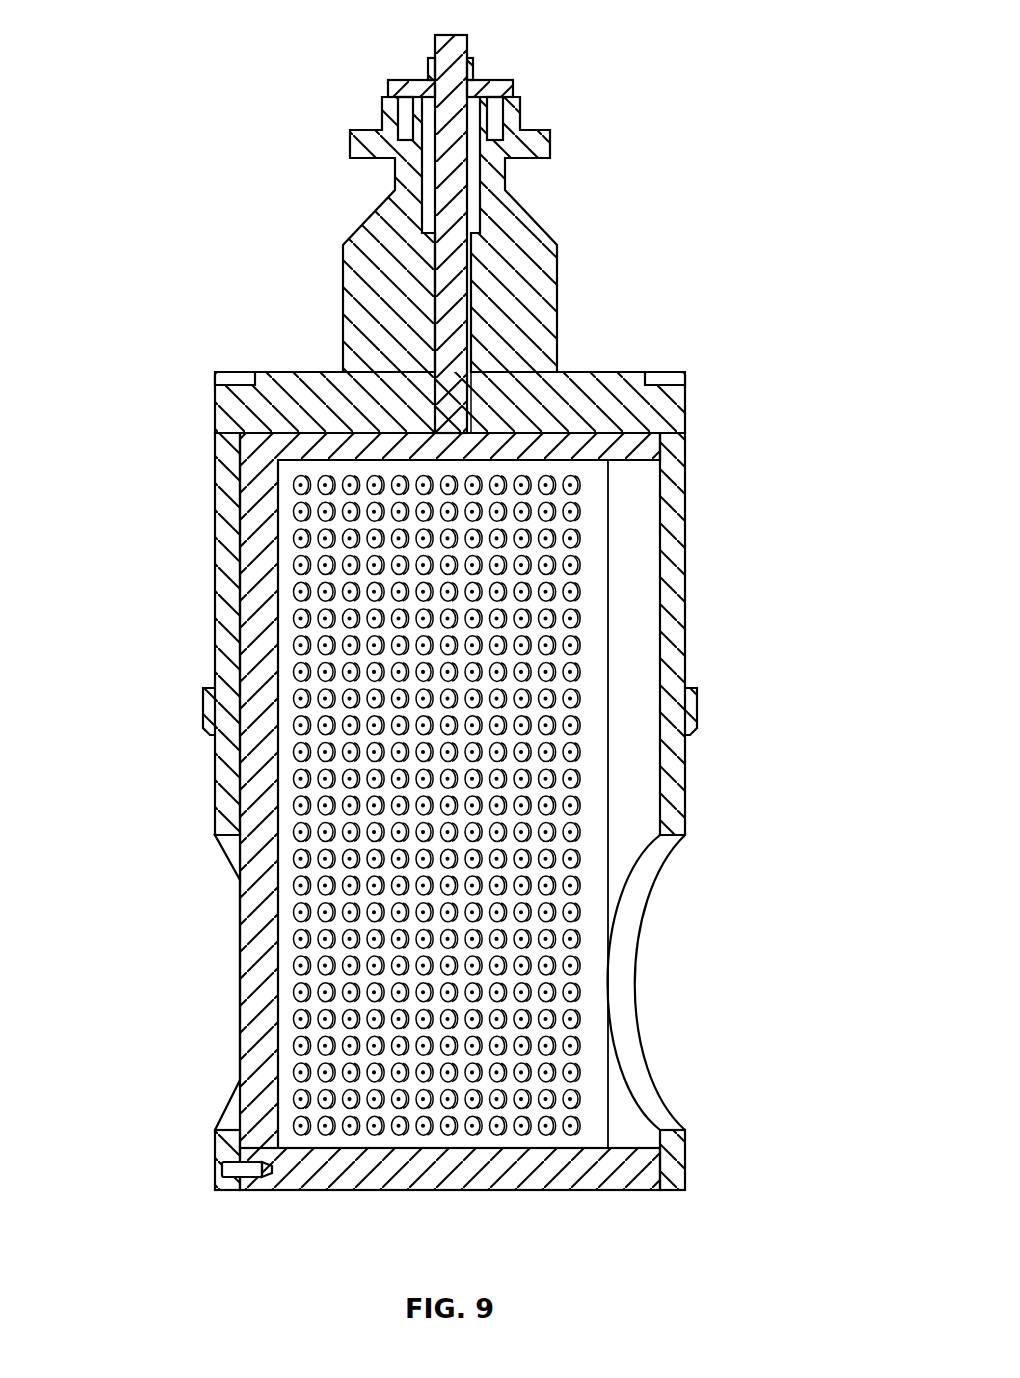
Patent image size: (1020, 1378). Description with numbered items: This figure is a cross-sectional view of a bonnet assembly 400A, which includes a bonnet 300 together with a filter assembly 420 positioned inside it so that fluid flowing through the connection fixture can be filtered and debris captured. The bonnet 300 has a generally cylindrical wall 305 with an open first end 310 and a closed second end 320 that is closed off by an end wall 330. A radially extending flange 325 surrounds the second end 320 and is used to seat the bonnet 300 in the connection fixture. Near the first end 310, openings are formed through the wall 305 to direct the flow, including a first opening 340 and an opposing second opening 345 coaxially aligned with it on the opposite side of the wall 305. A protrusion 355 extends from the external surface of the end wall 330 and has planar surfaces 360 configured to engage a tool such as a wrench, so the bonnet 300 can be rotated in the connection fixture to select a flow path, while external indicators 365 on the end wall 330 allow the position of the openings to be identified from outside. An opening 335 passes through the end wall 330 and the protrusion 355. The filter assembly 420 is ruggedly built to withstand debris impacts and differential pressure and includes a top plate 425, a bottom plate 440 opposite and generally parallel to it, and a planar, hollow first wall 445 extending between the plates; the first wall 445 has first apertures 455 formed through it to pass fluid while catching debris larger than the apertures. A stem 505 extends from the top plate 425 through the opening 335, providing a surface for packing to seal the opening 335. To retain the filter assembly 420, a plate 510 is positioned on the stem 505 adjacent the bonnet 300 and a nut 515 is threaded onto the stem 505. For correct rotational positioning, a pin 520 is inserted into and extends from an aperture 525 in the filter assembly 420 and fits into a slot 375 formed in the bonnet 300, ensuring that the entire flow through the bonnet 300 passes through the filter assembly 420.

The bonnet assembly 400A is at (238, 146).
The bonnet 300 is at (212, 440).
The wall 305 is at (220, 540).
The first end 310 is at (672, 1192).
The second end 320 is at (247, 382).
The flange 325 is at (204, 713).
The end wall 330 is at (318, 398).
The opening 335 is at (462, 284).
The first opening 340 is at (680, 840).
The second opening 345 is at (228, 842).
The protrusion 355 is at (513, 287).
The planar surfaces 360 is at (348, 270).
The external indicators 365 is at (235, 378).
The slot 375 is at (224, 1170).
The filter assembly 420 is at (626, 594).
The top plate 425 is at (620, 448).
The bottom plate 440 is at (528, 1166).
The first wall 445 is at (597, 905).
The first apertures 455 is at (572, 965).
The stem 505 is at (453, 160).
The plate 510 is at (405, 93).
The nut 515 is at (473, 76).
The pin 520 is at (236, 1176).
The aperture 525 is at (268, 1177).